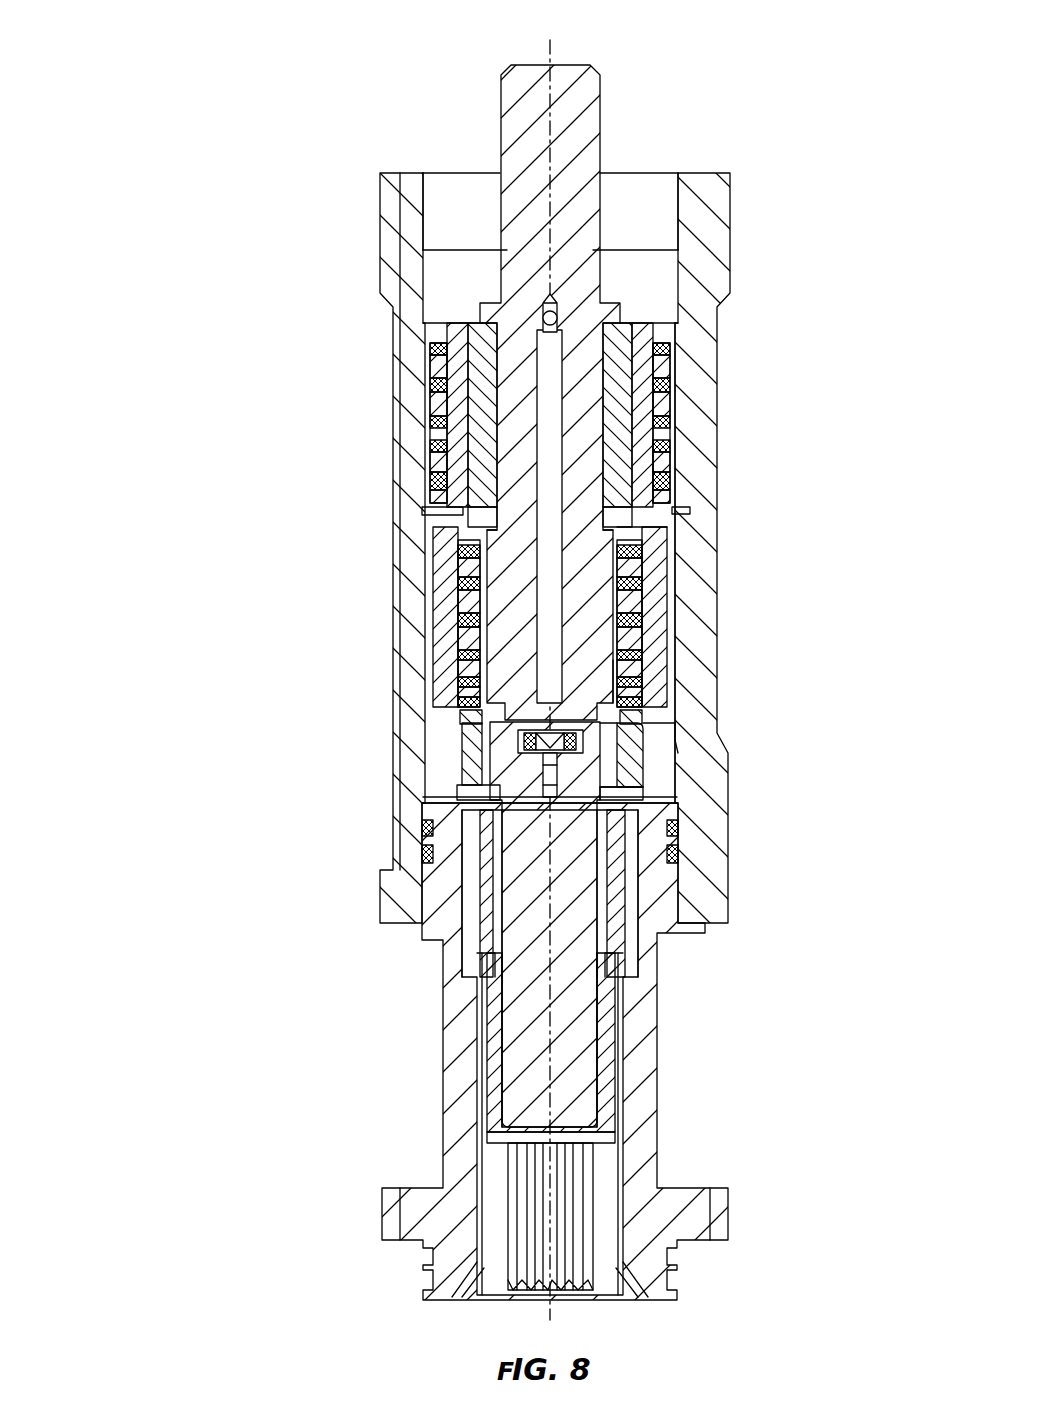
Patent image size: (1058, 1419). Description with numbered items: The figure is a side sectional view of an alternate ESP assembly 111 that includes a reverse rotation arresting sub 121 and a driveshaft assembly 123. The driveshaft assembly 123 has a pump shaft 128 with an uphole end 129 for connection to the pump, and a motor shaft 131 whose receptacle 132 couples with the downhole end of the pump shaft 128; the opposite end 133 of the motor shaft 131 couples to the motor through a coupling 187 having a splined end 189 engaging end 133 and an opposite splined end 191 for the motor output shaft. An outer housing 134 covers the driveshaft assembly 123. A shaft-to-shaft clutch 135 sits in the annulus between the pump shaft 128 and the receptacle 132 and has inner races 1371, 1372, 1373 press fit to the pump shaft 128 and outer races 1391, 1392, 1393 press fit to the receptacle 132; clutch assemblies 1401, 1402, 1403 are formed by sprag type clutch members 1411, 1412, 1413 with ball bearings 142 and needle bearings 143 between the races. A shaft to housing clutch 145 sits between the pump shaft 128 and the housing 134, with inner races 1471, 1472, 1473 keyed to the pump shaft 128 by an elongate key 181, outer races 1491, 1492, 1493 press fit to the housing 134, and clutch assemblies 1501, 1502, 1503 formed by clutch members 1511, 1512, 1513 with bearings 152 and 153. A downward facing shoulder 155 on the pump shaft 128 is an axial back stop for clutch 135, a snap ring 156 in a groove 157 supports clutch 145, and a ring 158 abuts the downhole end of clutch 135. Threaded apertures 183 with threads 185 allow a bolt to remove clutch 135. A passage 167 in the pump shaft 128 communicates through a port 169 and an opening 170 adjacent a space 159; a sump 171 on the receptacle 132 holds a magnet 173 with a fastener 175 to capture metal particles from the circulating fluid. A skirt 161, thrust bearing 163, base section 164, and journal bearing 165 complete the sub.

The ESP assembly 111 is at (474, 694).
The reverse rotation arresting sub 121 is at (538, 694).
The driveshaft assembly 123 is at (557, 385).
The pump shaft 128 is at (547, 517).
The uphole end 129 is at (586, 389).
The shaft to housing clutch 145 is at (460, 280).
The outer housing 134 is at (400, 218).
The shaft-to-shaft clutch 135 is at (695, 535).
The port 169 is at (546, 300).
The elongate key 181 is at (492, 383).
The snap ring 156 is at (520, 560).
The downward facing shoulder 155 is at (617, 530).
The passage 167 is at (537, 540).
The opening 170 is at (525, 700).
The bearings 143 is at (612, 690).
The magnet 173 is at (556, 762).
The end 133 is at (578, 985).
The splined end 189 is at (600, 1025).
The coupling 187 is at (607, 1118).
The splined end 191 is at (592, 1308).
The base section 164 is at (400, 935).
The motor shaft 131 is at (480, 722).
The space 159 is at (472, 750).
The sump 171 is at (538, 745).
The fastener 175 is at (546, 762).
The receptacle 132 is at (440, 520).
The groove 157 is at (443, 560).
The bearings 142 is at (655, 640).
The bearings 152 is at (655, 422).
The bearings 153 is at (655, 490).
The ring 158 is at (640, 750).
The apertures 183 is at (665, 790).
The threads 185 is at (690, 800).
The skirt 161 is at (678, 835).
The thrust bearing 163 is at (678, 858).
The journal bearing 165 is at (618, 850).
The outer race 1491 is at (432, 380).
The outer race 1492 is at (432, 410).
The outer race 1493 is at (432, 480).
The clutch assembly 1501 is at (425, 345).
The clutch assembly 1502 is at (425, 388).
The clutch assembly 1503 is at (425, 458).
The inner race 1471 is at (655, 355).
The inner race 1472 is at (655, 385).
The inner race 1473 is at (655, 444).
The clutch member 1511 is at (662, 362).
The clutch member 1512 is at (662, 398).
The clutch member 1513 is at (662, 462).
The outer race 1391 is at (458, 580).
The outer race 1392 is at (458, 622).
The outer race 1393 is at (458, 682).
The clutch assembly 1401 is at (447, 565).
The clutch assembly 1402 is at (447, 600).
The clutch assembly 1403 is at (447, 642).
The inner race 1371 is at (640, 572).
The inner race 1372 is at (640, 622).
The inner race 1373 is at (640, 692).
The clutch member 1411 is at (632, 555).
The clutch member 1412 is at (632, 600).
The clutch member 1413 is at (632, 670).